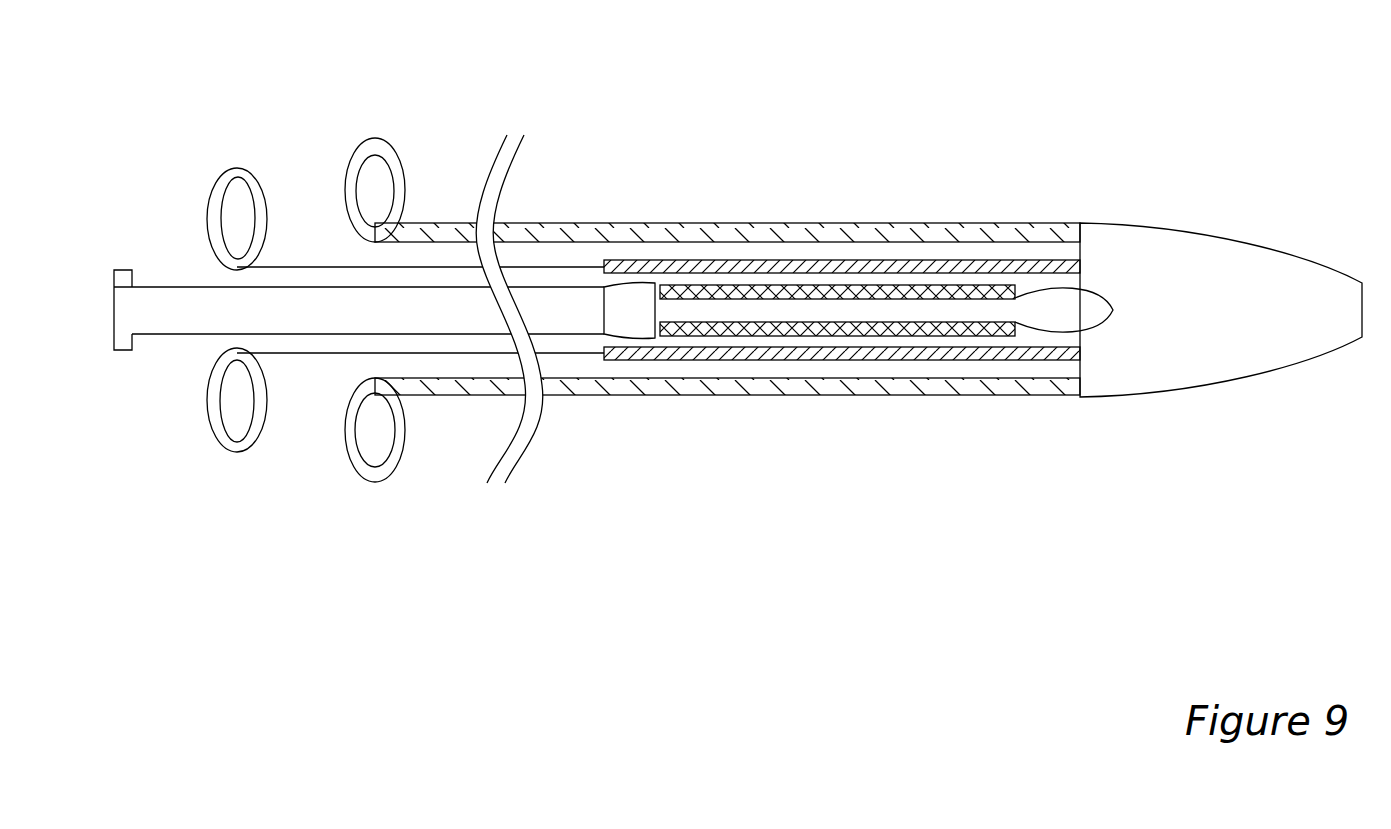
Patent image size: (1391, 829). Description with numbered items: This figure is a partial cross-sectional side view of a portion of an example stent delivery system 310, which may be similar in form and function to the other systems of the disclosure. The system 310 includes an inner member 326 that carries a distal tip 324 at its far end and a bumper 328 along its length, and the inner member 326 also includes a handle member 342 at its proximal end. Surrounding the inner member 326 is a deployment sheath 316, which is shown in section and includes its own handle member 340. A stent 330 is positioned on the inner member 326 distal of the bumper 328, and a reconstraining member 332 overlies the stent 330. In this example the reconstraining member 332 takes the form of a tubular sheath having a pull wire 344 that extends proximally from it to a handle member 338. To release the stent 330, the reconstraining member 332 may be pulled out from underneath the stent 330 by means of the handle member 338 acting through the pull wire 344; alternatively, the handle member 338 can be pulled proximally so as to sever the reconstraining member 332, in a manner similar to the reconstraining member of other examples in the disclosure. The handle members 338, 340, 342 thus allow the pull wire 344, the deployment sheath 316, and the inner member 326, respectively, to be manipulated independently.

The system 310 is at (531, 105).
The deployment sheath 316 is at (985, 232).
The distal tip 324 is at (1203, 247).
The inner member 326 is at (753, 300).
The bumper 328 is at (642, 288).
The stent 330 is at (705, 328).
The reconstraining member 332 is at (875, 265).
The handle member 338 is at (236, 170).
The handle member 340 is at (372, 138).
The handle member 342 is at (123, 272).
The pull wire 344 is at (349, 267).